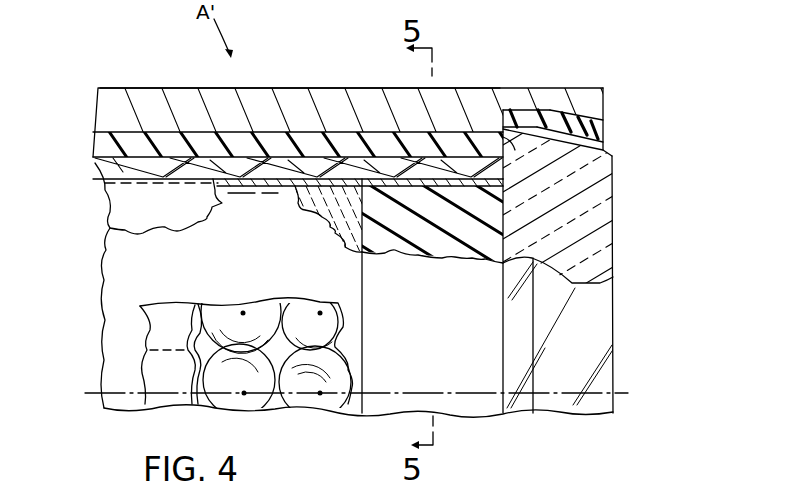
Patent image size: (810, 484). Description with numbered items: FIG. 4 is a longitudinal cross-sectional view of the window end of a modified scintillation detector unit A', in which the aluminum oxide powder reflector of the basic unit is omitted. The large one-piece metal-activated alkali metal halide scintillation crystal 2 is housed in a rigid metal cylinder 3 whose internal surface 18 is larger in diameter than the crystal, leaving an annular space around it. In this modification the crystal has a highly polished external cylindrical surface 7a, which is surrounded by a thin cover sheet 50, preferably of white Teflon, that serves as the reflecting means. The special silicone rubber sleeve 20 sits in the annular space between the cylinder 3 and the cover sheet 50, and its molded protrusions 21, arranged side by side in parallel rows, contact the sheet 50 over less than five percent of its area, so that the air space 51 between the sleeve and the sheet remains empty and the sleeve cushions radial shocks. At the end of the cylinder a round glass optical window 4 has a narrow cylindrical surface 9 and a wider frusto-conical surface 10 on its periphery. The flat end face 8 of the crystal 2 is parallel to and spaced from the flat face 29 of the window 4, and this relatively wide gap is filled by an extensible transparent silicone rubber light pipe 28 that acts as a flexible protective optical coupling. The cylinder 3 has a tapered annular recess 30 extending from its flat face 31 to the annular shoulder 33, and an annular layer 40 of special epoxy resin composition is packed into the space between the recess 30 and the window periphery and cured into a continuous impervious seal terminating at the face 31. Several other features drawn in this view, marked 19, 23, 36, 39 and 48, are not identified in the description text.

The scintillation crystal 2 is at (108, 312).
The metal cylinder 3 is at (120, 97).
The optical window 4 is at (618, 232).
The external cylindrical surface 7a is at (117, 272).
The flat end face 8 is at (363, 300).
The cylindrical surface 9 is at (523, 405).
The frusto-conical surface 10 is at (597, 135).
The internal surface 18 is at (128, 142).
The outer surface of plate 19 is at (182, 88).
The sleeve 20 is at (110, 147).
The protrusions 21 is at (187, 178).
The contact points 23 is at (165, 183).
The light pipe 28 is at (486, 245).
The flat face 29 is at (503, 308).
The tapered annular recess 30 is at (556, 112).
The flat face 31 is at (604, 103).
The annular shoulder 33 is at (503, 129).
The fillet 36 is at (503, 143).
The outer wall 39 is at (613, 307).
The epoxy layer 40 is at (590, 130).
The thin interlayer 48 is at (422, 179).
The cover sheet 50 is at (118, 225).
The air space 51 is at (117, 170).